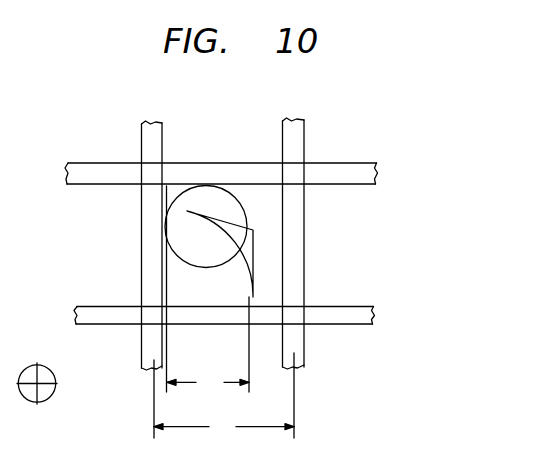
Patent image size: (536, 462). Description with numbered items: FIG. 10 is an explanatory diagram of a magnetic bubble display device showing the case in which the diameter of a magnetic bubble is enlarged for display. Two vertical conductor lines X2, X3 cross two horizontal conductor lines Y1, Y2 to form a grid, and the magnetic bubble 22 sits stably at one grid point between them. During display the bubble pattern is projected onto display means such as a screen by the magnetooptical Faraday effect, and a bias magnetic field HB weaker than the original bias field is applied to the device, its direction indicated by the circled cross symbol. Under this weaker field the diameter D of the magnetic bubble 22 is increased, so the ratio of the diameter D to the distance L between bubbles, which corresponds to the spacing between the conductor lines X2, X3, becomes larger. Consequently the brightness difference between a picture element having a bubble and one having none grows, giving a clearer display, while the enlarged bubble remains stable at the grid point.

The magnetic bubble 22 is at (226, 212).
The X conductor line X2 is at (152, 127).
The X conductor line X3 is at (290, 126).
The Y conductor line Y1 is at (372, 172).
The Y conductor line Y2 is at (366, 313).
The diameter of magnetic bubble D is at (208, 289).
The distance between bubbles L is at (224, 395).
The bias magnetic field HB is at (51, 396).